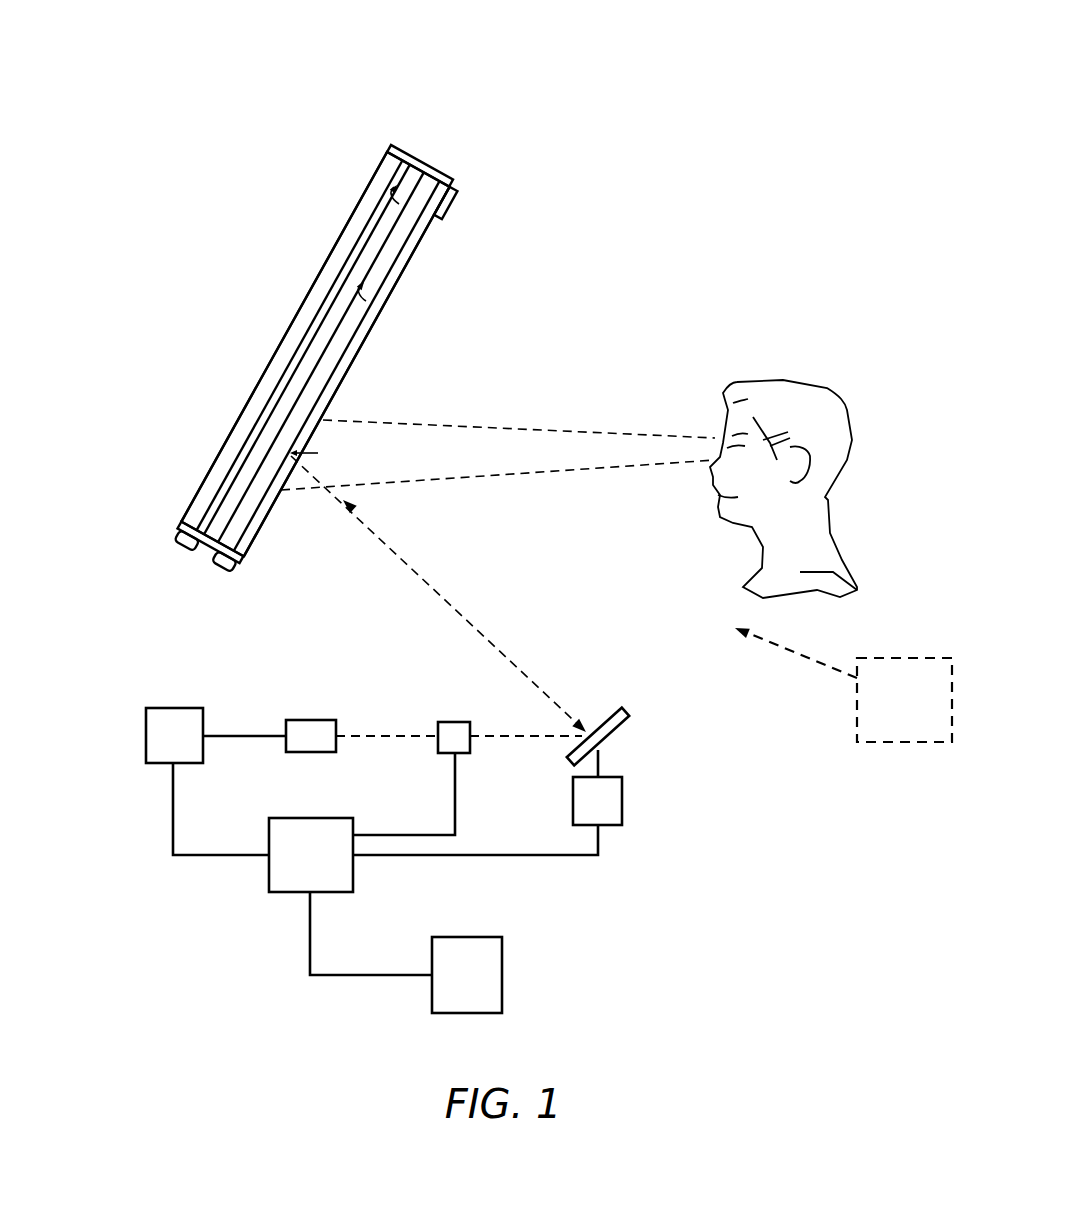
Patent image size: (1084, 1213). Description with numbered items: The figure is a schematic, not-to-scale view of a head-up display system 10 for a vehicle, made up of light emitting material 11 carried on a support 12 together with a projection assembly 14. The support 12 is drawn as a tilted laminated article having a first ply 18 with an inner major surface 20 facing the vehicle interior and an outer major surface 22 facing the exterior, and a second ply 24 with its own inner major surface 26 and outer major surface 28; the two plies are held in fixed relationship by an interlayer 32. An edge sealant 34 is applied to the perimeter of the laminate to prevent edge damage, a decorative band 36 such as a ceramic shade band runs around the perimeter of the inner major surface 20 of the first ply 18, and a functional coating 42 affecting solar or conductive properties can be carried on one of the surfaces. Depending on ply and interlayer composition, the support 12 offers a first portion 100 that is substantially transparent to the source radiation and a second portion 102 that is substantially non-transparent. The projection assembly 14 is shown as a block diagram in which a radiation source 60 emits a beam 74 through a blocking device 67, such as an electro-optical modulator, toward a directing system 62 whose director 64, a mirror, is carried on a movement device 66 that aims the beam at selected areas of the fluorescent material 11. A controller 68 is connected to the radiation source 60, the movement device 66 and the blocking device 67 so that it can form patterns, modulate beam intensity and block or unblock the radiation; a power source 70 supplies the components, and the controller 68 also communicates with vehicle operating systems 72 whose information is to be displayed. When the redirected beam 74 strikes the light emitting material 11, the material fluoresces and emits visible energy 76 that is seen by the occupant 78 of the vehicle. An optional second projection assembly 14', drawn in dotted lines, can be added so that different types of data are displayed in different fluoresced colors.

The display system 10 is at (664, 152).
The light emitting material 11 is at (400, 242).
The support 12 is at (423, 83).
The projection assembly 14 is at (408, 836).
The second projection assembly 14' is at (843, 664).
The first ply 18 is at (441, 174).
The inner major surface 20 is at (380, 316).
The outer major surface 22 is at (365, 290).
The second ply 24 is at (392, 161).
The inner major surface 26 is at (399, 203).
The outer major surface 28 is at (347, 228).
The interlayer 32 is at (367, 268).
The edge sealant 34 is at (427, 163).
The decorative band 36 is at (461, 203).
The functional coating 42 is at (330, 308).
The radiation source 60 is at (308, 753).
The directing system 62 is at (679, 732).
The director 64 is at (603, 707).
The movement device 66 is at (623, 800).
The blocking device 67 is at (455, 721).
The controller 68 is at (287, 893).
The power source 70 is at (153, 765).
The vehicle operating systems 72 is at (472, 1014).
The beam 74 is at (383, 722).
The energy 76 is at (344, 450).
The occupant 78 is at (788, 379).
The first portion 100 is at (222, 570).
The second portion 102 is at (193, 550).